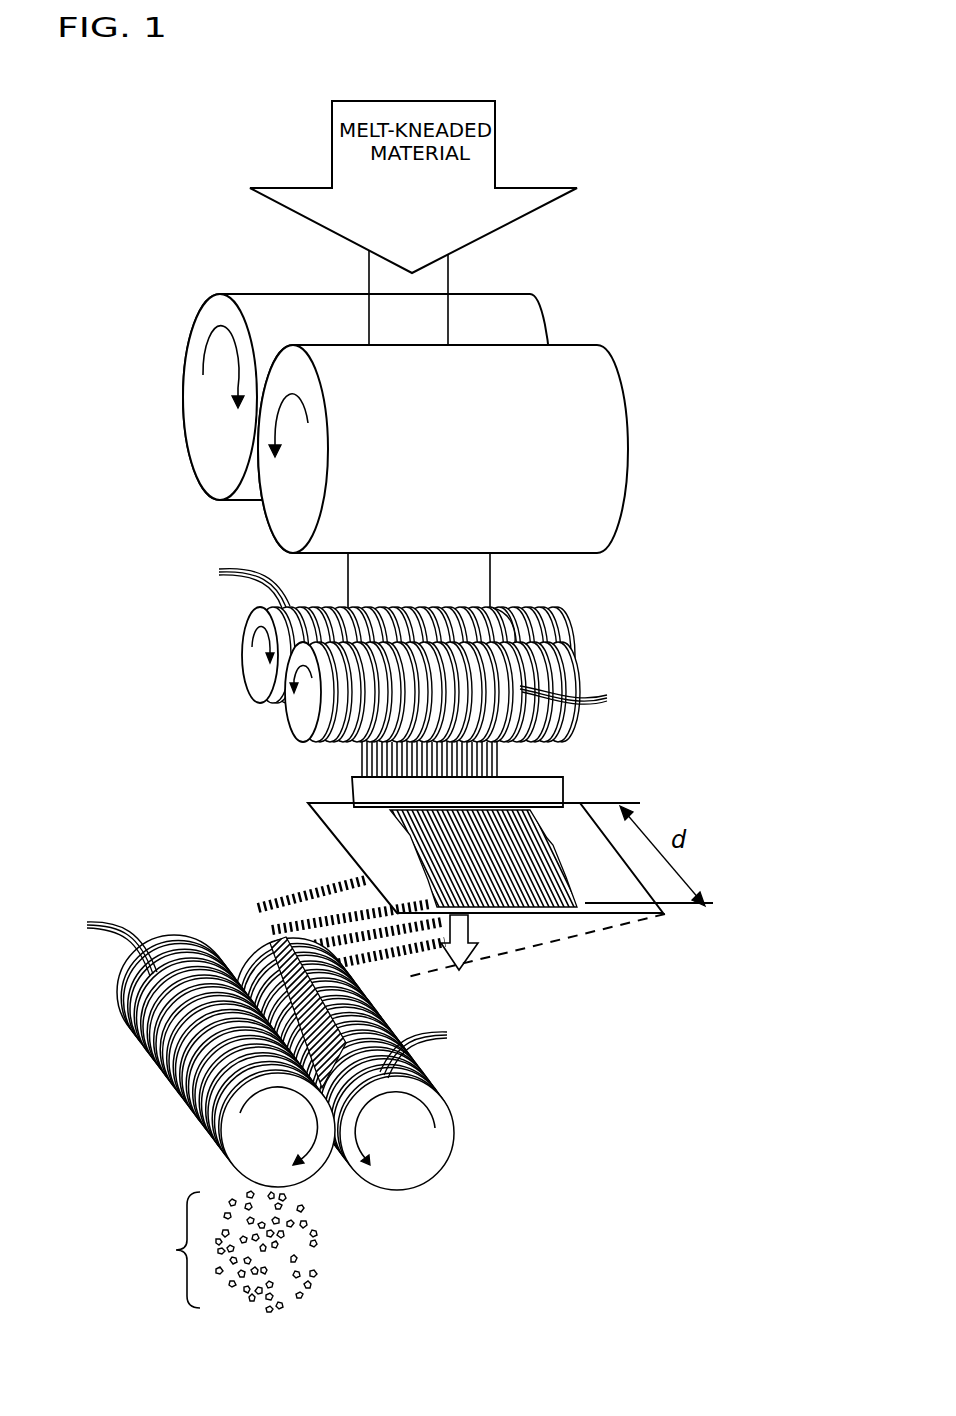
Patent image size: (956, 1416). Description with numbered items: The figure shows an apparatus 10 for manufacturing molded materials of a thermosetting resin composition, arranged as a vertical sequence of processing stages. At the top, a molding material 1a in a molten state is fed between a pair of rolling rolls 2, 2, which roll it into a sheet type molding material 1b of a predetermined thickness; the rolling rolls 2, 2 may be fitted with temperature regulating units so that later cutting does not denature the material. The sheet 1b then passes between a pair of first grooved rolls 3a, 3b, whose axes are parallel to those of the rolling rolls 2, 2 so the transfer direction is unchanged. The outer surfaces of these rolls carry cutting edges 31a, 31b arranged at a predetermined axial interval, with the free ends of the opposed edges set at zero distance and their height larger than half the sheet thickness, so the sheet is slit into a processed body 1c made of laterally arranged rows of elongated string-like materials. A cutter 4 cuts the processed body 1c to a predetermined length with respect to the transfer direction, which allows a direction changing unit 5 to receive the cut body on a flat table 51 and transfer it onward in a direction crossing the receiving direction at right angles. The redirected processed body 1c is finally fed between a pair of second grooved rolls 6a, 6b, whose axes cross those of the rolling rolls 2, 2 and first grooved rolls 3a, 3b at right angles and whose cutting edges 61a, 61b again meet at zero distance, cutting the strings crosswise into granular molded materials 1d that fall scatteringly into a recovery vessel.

The apparatus for manufacturing molded materials 10 is at (722, 175).
The molding material 1a is at (408, 300).
The rolling rolls 2 is at (356, 394).
The sheet type molding material 1b is at (427, 597).
The first grooved roll 3a is at (305, 720).
The first grooved roll 3b is at (258, 677).
The cutting edges 31a is at (590, 699).
The cutting edges 31b is at (225, 583).
The cutter 4 is at (380, 790).
The direction changing unit 5 is at (330, 818).
The flat table 51 is at (373, 840).
The processed body 1c is at (487, 863).
The second grooved roll 6a is at (273, 1145).
The second grooved roll 6b is at (405, 1167).
The cutting edges 61a is at (92, 942).
The cutting edges 61b is at (440, 1049).
The granular molded materials 1d is at (223, 1251).